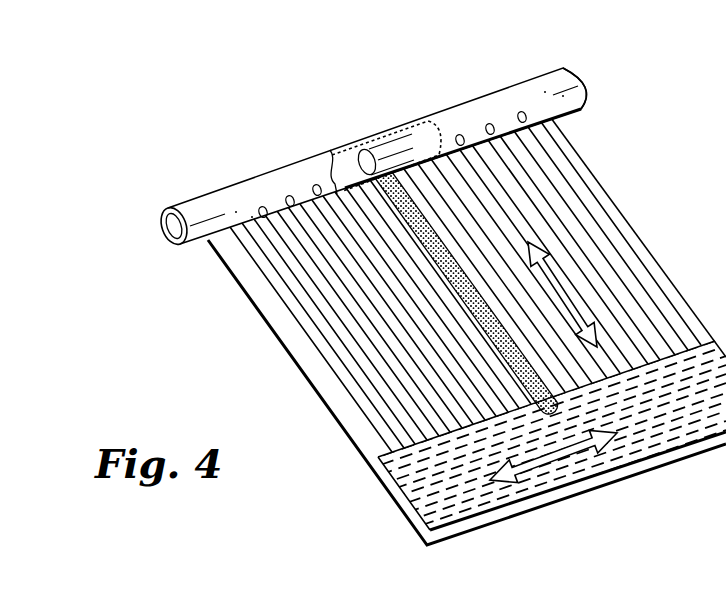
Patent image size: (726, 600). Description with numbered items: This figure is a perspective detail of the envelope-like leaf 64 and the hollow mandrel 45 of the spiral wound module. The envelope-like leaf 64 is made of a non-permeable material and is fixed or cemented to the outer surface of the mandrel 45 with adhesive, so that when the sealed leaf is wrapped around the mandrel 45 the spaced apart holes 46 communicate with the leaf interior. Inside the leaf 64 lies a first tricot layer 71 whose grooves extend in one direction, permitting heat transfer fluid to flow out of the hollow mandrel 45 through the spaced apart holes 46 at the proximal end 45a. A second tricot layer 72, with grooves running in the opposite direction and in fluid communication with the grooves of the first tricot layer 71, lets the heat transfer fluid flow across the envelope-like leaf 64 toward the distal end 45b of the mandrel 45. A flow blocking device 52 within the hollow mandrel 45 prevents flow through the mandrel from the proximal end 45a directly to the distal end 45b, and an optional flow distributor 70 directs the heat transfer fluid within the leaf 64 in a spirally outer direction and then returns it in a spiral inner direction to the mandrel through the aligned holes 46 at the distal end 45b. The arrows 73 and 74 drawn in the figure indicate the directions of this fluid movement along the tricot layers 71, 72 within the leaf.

The mandrel 45 is at (543, 74).
The proximal end of mandrel 45a is at (173, 204).
The distal end of mandrel 45b is at (582, 112).
The spaced apart holes 46 is at (289, 197).
The flow blocking device 52 is at (392, 142).
The envelope-like leaf 64 is at (256, 298).
The flow distributor 70 is at (465, 303).
The first tricot layer 71 is at (579, 190).
The second tricot layer 72 is at (405, 488).
The flow direction arrow 73 is at (563, 290).
The flow direction arrow 74 is at (572, 452).